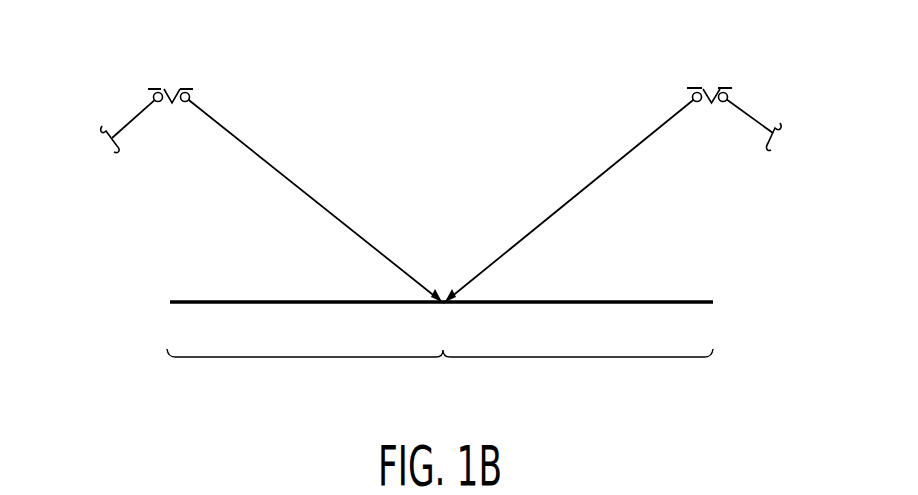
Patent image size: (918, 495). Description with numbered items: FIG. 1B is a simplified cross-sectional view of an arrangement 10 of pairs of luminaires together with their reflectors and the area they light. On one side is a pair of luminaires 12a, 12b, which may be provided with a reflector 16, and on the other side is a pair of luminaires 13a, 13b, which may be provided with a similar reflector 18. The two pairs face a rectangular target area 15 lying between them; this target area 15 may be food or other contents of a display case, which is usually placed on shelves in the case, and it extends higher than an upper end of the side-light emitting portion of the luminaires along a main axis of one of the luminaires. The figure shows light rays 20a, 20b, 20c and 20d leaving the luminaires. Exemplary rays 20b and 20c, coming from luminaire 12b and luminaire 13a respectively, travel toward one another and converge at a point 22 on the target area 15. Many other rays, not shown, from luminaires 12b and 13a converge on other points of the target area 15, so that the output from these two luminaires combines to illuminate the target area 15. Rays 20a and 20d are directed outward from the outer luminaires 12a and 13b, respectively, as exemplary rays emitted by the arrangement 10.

The arrangement 10 is at (452, 181).
The luminaire 12a is at (728, 97).
The luminaire 12b is at (692, 97).
The luminaire 13a is at (192, 97).
The luminaire 13b is at (153, 96).
The target area 15 is at (440, 364).
The reflector 16 is at (709, 65).
The reflector 18 is at (169, 60).
The light ray 20a is at (747, 123).
The light ray 20b is at (613, 167).
The light ray 20c is at (310, 198).
The light ray 20d is at (128, 127).
The point 22 is at (443, 303).